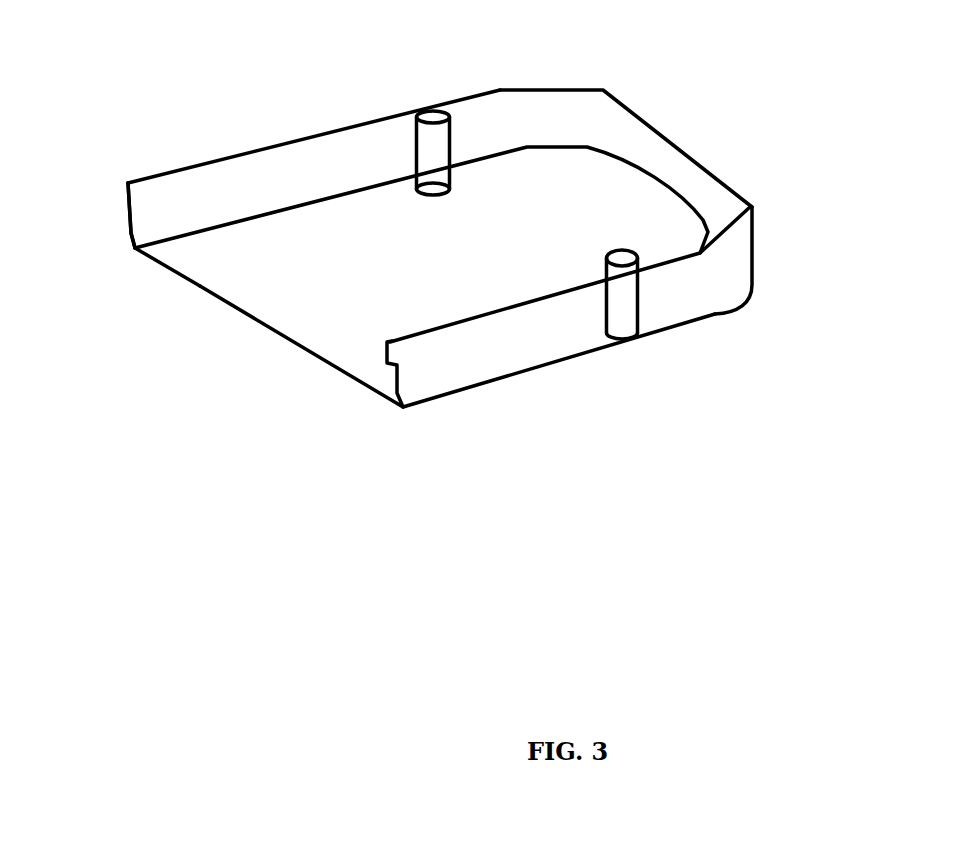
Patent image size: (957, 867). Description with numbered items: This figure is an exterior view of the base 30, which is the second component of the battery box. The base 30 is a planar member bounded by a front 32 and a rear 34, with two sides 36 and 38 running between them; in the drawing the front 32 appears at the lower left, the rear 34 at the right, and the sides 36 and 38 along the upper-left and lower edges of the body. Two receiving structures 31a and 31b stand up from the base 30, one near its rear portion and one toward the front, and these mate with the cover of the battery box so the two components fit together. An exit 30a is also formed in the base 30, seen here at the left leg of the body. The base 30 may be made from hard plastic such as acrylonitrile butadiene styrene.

The base 30 is at (630, 148).
The exit 30a is at (353, 353).
The receiving structure 31a is at (460, 145).
The receiving structure 31b is at (628, 307).
The front 32 is at (270, 327).
The rear 34 is at (757, 227).
The side 36 is at (330, 148).
The side 38 is at (567, 352).